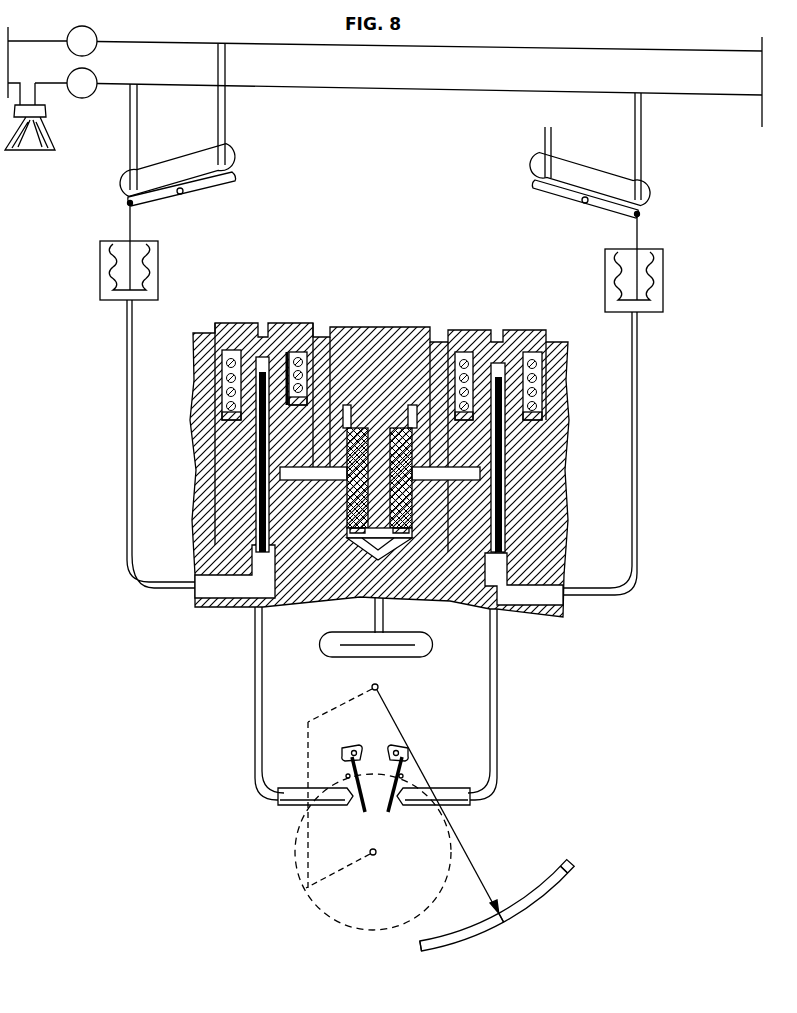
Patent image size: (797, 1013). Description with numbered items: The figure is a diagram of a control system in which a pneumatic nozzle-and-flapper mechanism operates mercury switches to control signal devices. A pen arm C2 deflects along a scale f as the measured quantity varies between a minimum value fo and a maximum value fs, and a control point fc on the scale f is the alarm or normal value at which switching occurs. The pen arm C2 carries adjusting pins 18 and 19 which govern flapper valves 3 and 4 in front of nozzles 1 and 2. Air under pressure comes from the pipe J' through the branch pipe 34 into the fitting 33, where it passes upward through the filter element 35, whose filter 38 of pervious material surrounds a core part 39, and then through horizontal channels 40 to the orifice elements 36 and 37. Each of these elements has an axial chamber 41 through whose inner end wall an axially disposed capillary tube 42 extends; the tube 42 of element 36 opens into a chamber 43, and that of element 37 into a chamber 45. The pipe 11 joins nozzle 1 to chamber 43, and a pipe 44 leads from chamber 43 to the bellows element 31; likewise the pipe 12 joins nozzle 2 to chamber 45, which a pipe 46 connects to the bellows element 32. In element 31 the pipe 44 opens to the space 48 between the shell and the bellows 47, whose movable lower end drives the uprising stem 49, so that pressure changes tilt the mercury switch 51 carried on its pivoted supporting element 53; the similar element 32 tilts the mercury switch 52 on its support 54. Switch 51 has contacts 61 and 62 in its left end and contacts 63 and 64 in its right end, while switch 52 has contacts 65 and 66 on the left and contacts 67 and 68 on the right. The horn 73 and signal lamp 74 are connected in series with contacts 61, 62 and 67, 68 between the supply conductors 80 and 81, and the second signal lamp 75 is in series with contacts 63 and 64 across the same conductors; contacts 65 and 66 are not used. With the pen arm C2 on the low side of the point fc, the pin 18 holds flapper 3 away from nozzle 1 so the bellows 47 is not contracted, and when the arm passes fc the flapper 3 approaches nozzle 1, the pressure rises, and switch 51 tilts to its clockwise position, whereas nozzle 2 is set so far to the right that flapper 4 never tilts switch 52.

The nozzle 1 is at (320, 793).
The nozzle 2 is at (448, 793).
The flapper valve 3 is at (361, 812).
The flapper valve 4 is at (389, 812).
The pipe 11 is at (255, 673).
The pipe 12 is at (498, 682).
The adjusting pin 18 is at (343, 759).
The adjusting pin 19 is at (410, 760).
The bellows element 31 is at (127, 288).
The bellows element 32 is at (604, 270).
The fitting 33 is at (553, 478).
The pipe 34 is at (374, 613).
The filter element 35 is at (395, 336).
The orifice element 36 is at (279, 330).
The orifice element 37 is at (514, 336).
The filter 38 is at (412, 517).
The core part 39 is at (356, 552).
The horizontal channels 40 is at (327, 477).
The axial chamber 41 is at (262, 356).
The capillary tube 42 is at (255, 457).
The chamber 43 is at (238, 590).
The pipe 44 is at (125, 413).
The chamber 45 is at (525, 598).
The pipe 46 is at (640, 430).
The bellows 47 is at (148, 261).
The space 48 is at (152, 297).
The stem 49 is at (128, 221).
The mercury switch 51 is at (180, 163).
The mercury switch 52 is at (580, 170).
The supporting element 53 is at (205, 189).
The supporting element 54 is at (566, 199).
The terminal contact 61 is at (129, 112).
The terminal contact 62 is at (138, 112).
The terminal contact 63 is at (217, 112).
The terminal contact 64 is at (226, 112).
The contact 65 is at (544, 130).
The contact 66 is at (552, 132).
The contact 67 is at (634, 123).
The contact 68 is at (642, 123).
The horn 73 is at (33, 148).
The signal lamp 74 is at (95, 75).
The second signal lamp 75 is at (92, 31).
The supply conductor 80 is at (9, 40).
The supply conductor 81 is at (760, 116).
The pipe J' is at (376, 656).
The pen arm C2 is at (486, 882).
The scale f is at (545, 891).
The minimum value fo is at (418, 948).
The control point fc is at (520, 918).
The maximum value fs is at (574, 864).